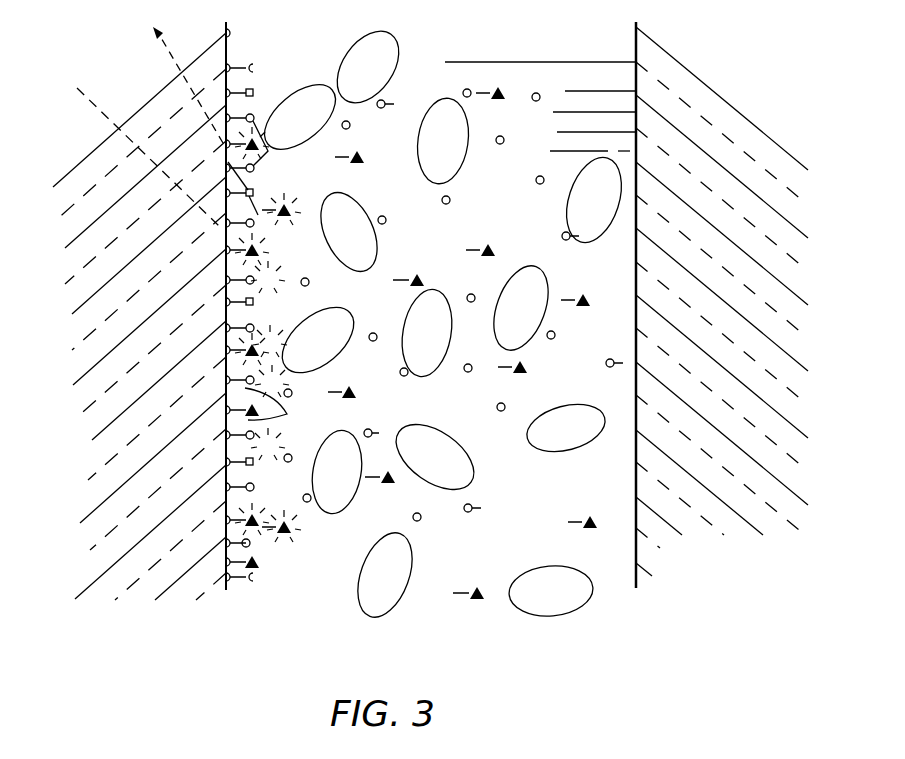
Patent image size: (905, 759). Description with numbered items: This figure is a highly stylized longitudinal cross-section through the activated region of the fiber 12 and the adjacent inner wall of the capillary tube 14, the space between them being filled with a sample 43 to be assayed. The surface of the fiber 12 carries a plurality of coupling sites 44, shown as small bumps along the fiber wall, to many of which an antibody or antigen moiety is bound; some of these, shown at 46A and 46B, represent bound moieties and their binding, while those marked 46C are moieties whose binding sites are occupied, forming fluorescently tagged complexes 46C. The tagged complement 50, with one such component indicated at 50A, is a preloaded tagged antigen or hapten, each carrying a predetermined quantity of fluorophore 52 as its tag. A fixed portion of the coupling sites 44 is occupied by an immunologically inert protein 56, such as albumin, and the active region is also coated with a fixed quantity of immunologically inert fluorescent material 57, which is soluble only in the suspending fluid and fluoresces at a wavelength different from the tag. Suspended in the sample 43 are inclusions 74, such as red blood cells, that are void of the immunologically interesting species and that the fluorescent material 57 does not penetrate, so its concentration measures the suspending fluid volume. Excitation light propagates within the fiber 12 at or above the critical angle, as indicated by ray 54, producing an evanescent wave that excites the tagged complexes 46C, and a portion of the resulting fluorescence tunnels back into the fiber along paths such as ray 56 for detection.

The fiber 12 is at (88, 453).
The capillary tube 14 is at (830, 431).
The sample 43 is at (543, 481).
The coupling sites 44 is at (231, 33).
The adsorbed species 46A is at (254, 68).
The intermediate complex 46B is at (268, 151).
The fluorescently tagged complexes 46C is at (266, 281).
The tagged complement 50 is at (384, 216).
The ion 50A is at (292, 392).
The fluorophore 52 is at (504, 142).
The ray 54 is at (84, 101).
The immunologically inert protein 56 is at (170, 68).
The fluorescent material 57 is at (258, 249).
The inclusions 74 is at (532, 264).